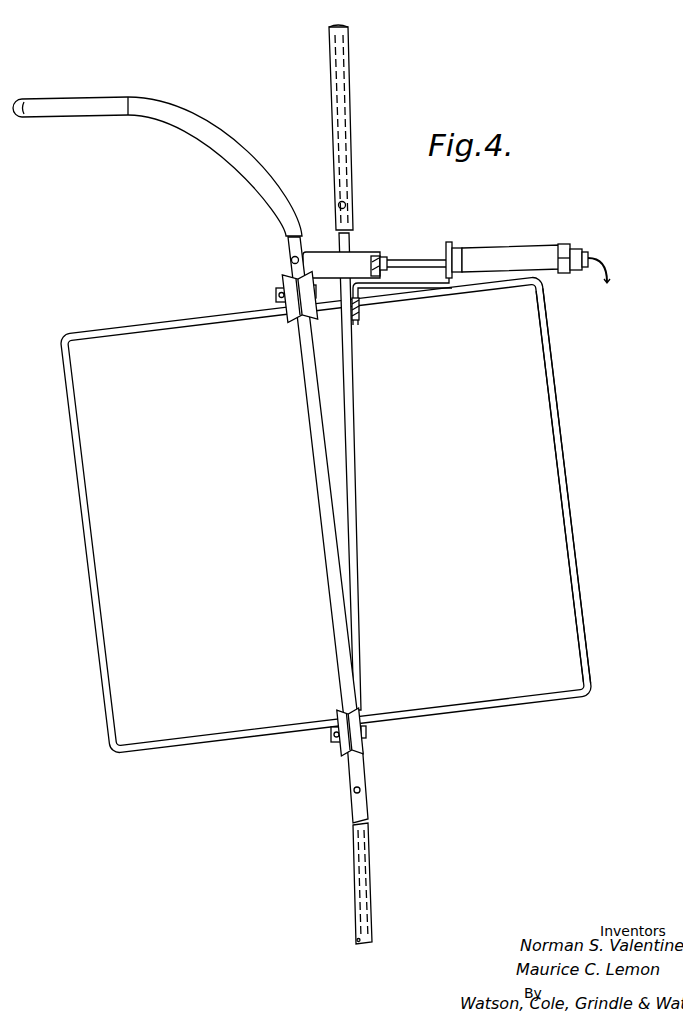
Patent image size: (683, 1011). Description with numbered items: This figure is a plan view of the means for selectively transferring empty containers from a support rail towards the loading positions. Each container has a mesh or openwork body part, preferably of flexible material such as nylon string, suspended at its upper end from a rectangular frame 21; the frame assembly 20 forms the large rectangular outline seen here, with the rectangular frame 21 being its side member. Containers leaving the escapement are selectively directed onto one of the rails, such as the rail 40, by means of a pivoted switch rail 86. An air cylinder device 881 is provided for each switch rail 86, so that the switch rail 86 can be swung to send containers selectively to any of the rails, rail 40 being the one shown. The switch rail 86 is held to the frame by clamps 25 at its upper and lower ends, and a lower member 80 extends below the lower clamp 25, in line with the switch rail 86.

The frame 20 is at (155, 313).
The rectangular frame 21 is at (552, 383).
The clamp 25 is at (288, 283).
The rail 40 is at (93, 105).
The leg 80 is at (372, 897).
The switch rail 86 is at (328, 553).
The air cylinder device 881 is at (517, 257).